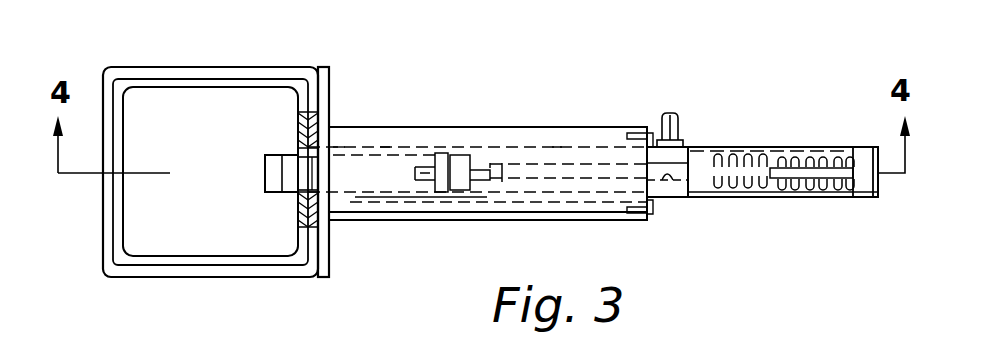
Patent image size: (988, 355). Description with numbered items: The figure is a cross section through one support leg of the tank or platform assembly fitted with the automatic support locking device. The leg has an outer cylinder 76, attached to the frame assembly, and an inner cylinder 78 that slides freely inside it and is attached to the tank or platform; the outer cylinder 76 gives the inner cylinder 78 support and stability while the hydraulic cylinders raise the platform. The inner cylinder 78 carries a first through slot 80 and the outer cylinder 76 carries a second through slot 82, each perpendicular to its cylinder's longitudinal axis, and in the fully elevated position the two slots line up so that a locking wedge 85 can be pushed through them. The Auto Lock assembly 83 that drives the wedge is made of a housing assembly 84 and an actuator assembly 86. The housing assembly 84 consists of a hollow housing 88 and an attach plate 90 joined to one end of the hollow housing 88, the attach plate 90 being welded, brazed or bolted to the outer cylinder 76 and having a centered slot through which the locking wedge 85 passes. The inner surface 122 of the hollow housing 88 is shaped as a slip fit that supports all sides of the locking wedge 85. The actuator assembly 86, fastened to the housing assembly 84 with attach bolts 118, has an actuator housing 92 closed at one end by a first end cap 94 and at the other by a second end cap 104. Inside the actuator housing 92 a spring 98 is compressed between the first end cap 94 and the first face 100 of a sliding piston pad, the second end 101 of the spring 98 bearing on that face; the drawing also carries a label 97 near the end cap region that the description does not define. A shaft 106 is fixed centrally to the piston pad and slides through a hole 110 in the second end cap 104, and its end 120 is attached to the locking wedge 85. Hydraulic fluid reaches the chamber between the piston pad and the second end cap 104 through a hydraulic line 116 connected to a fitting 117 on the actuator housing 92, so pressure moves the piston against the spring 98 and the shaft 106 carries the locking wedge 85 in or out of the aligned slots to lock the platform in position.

The outer cylinder 76 is at (152, 67).
The inner cylinder 78 is at (166, 95).
The first through slot 80 is at (277, 155).
The second through slot 82 is at (337, 148).
The Auto Lock assembly 83 is at (545, 117).
The housing assembly 84 is at (489, 124).
The locking wedge 85 is at (264, 183).
The actuator assembly 86 is at (887, 187).
The hollow housing 88 is at (380, 148).
The attach plate 90 is at (330, 277).
The actuator housing 92 is at (818, 147).
The first end cap 94 is at (861, 186).
The housing wall 97 is at (845, 189).
The spring 98 is at (843, 162).
The first face of piston pad 100 is at (838, 190).
The second end of spring 101 is at (723, 183).
The second end cap 104 is at (706, 168).
The shaft 106 is at (587, 163).
The hole 110 is at (673, 178).
The hydraulic line 116 is at (686, 147).
The fitting 117 is at (714, 150).
The attach bolts 118 is at (662, 217).
The end of shaft 120 is at (469, 180).
The inner surface of hollow housing 122 is at (418, 195).